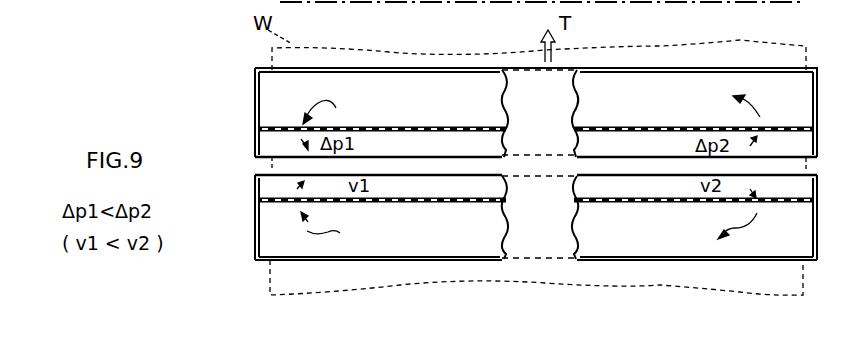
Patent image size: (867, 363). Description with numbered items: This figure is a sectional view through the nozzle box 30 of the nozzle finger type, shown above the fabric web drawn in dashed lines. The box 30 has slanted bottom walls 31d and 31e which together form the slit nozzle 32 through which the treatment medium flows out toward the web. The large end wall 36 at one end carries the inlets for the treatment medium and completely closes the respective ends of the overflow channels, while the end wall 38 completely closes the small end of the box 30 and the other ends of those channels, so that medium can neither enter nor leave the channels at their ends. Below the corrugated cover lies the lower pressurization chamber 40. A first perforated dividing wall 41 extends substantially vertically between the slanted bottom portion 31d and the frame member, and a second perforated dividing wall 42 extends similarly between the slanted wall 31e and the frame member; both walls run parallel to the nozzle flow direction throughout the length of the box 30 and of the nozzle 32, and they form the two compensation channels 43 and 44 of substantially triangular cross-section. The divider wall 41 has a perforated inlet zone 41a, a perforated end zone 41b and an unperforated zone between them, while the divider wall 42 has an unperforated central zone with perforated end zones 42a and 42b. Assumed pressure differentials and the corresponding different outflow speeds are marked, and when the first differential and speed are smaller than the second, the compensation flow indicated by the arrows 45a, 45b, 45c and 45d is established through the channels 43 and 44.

The nozzle box 30 is at (817, 64).
The slit nozzle 32 is at (255, 163).
The large end wall 36 is at (256, 98).
The end wall 38 is at (817, 104).
The lower pressurization chamber 40 is at (536, 145).
The first perforated dividing wall 41 is at (572, 133).
The perforated inlet zone 41a is at (269, 125).
The perforated end zone 41b is at (670, 125).
The second perforated dividing wall 42 is at (570, 200).
The perforated end zone 42a is at (282, 202).
The perforated end zone 42b is at (798, 201).
The compensation channel 43 is at (410, 110).
The compensation channel 44 is at (405, 241).
The compensation flow arrow 45a is at (334, 125).
The compensation flow arrow 45b is at (302, 211).
The compensation flow arrow 45c is at (712, 214).
The compensation flow arrow 45d is at (764, 119).
The slanted bottom wall 31e is at (573, 101).
The slanted bottom wall 31d is at (573, 228).